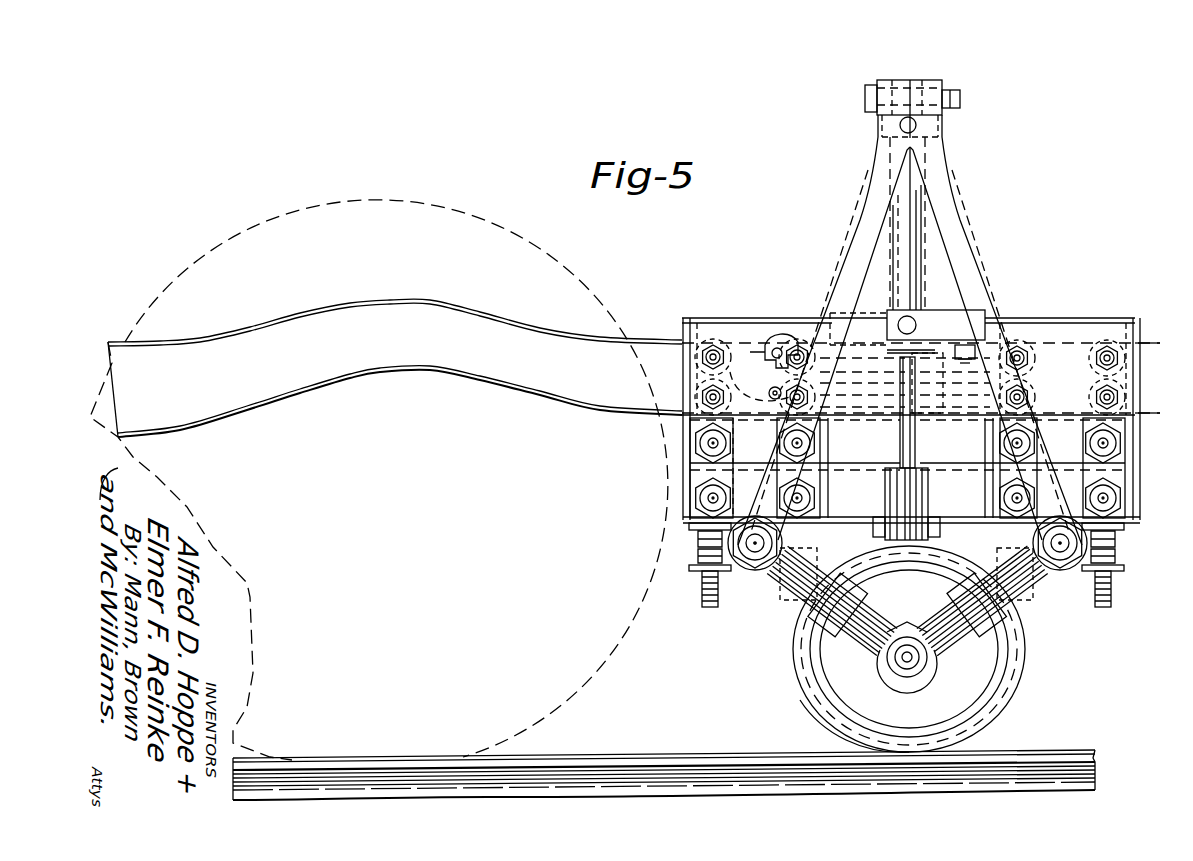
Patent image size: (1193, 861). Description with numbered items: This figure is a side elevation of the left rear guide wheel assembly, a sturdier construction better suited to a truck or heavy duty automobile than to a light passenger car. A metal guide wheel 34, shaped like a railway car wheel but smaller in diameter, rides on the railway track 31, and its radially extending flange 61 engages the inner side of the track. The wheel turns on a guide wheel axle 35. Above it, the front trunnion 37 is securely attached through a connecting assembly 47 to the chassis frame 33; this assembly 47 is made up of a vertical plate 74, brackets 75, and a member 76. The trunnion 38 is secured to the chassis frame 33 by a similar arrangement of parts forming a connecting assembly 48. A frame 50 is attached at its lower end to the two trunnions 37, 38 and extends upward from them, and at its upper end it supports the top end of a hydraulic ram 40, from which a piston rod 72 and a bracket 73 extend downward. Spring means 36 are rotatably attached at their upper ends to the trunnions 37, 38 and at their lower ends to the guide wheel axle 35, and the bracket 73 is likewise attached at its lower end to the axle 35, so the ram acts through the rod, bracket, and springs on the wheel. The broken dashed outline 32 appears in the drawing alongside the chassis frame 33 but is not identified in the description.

The railway track 31 is at (702, 757).
The cutting disc 32 is at (465, 603).
The chassis frame 33 is at (570, 404).
The guide wheel 34 is at (1000, 680).
The guide wheel axle 35 is at (898, 664).
The spring means 36 is at (808, 604).
The front trunnion 37 is at (758, 553).
The trunnion 38 is at (1060, 553).
The hydraulic ram 40 is at (897, 215).
The connecting assembly 47 is at (682, 328).
The connecting assembly 48 is at (1046, 322).
The frame 50 is at (948, 194).
The flange 61 is at (806, 710).
The piston rod 72 is at (900, 442).
The bracket 73 is at (888, 552).
The vertical plate 74 is at (690, 455).
The brackets 75 is at (705, 469).
The member 76 is at (697, 553).